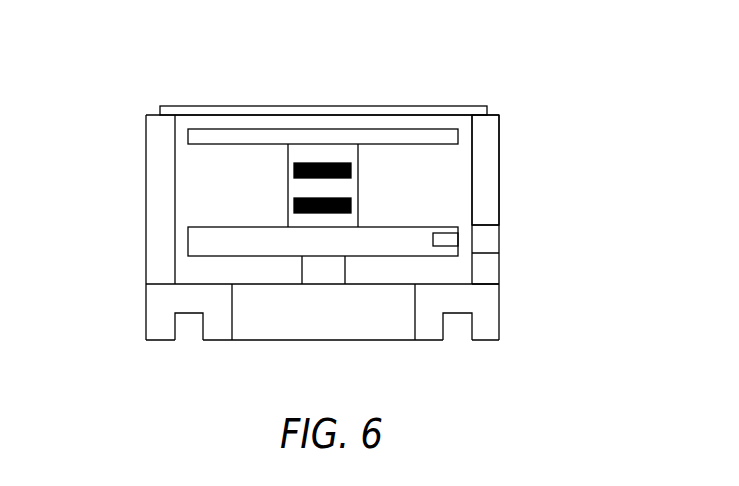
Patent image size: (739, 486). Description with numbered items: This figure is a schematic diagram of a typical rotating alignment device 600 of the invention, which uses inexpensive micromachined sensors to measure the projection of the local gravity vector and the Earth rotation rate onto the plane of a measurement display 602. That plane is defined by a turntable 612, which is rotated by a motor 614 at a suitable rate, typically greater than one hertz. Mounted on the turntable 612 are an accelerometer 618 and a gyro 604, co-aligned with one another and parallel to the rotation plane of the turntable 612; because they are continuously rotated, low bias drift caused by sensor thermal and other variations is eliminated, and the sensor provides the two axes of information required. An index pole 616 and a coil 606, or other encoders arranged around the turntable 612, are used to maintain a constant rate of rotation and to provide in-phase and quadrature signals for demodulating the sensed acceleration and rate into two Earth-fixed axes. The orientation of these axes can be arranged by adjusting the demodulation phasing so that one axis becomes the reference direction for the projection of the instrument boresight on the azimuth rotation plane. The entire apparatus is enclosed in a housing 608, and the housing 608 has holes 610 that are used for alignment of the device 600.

The device 600 is at (568, 50).
The measurement display 602 is at (438, 127).
The gyro 604 is at (294, 169).
The coil 606 is at (501, 239).
The housing 608 is at (501, 158).
The holes 610 is at (188, 355).
The turntable 612 is at (188, 242).
The motor 614 is at (380, 340).
The index pole 616 is at (445, 247).
The accelerometer 618 is at (294, 205).